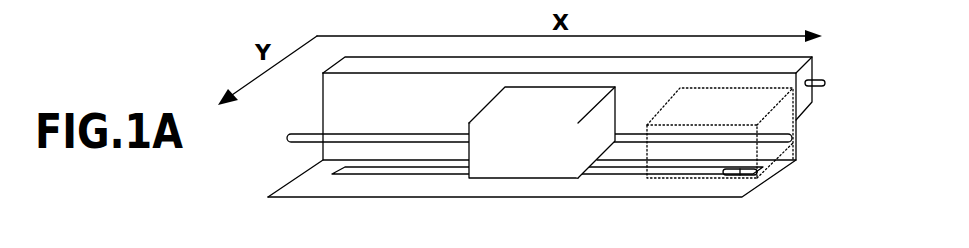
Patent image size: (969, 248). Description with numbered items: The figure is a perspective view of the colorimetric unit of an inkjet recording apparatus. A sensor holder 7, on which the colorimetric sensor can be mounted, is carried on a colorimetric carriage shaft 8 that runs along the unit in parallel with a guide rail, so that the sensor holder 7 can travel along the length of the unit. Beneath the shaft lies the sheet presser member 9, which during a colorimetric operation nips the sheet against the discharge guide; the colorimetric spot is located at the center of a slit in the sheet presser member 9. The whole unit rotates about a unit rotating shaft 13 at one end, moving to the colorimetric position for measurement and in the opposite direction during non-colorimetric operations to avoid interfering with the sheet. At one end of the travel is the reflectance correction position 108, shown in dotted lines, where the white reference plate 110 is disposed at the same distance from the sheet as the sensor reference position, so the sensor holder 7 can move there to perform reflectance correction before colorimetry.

The sensor holder 7 is at (487, 103).
The colorimetric carriage shaft 8 is at (379, 136).
The sheet presser member 9 is at (665, 185).
The unit rotating shaft 13 is at (828, 83).
The reflectance correction position 108 is at (773, 108).
The white reference plate 110 is at (762, 176).